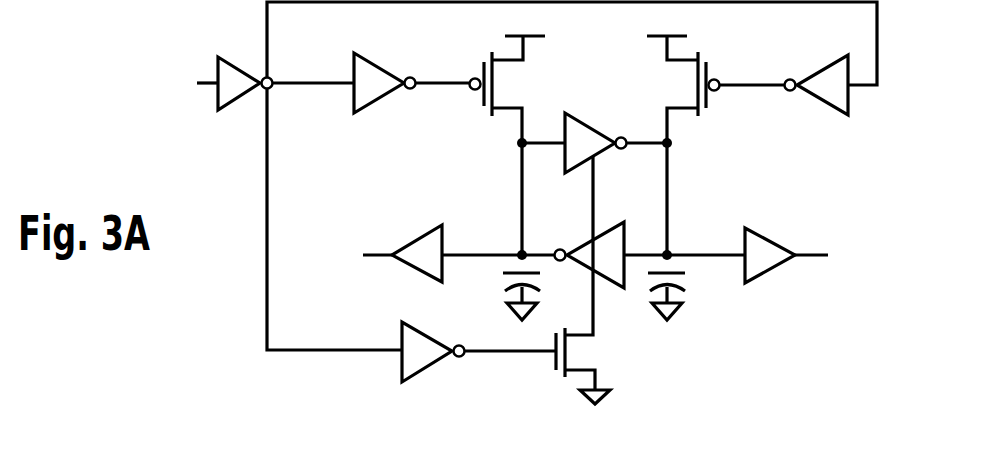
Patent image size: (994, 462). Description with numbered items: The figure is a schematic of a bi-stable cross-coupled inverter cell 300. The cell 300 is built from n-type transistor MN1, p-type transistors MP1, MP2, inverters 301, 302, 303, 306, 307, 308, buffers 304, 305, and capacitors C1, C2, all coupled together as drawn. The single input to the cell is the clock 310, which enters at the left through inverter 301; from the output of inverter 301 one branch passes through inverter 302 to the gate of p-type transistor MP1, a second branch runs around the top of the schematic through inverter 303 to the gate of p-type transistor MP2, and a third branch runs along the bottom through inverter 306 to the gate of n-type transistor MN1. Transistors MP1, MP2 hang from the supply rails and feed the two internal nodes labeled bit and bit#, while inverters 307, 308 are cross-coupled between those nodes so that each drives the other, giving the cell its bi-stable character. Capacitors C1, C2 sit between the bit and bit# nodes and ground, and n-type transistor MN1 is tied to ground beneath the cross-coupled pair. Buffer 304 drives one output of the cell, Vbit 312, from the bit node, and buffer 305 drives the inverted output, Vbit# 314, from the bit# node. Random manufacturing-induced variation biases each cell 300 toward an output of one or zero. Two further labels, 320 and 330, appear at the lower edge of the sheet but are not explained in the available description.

The bi-stable cross-coupled inverter cell 300 is at (78, 72).
The clock 310 is at (143, 105).
The inverter 301 is at (243, 105).
The inverter 302 is at (396, 107).
The inverter 303 is at (822, 113).
The buffer 304 is at (403, 265).
The buffer 305 is at (782, 283).
The inverter 306 is at (432, 380).
The inverter 307 is at (630, 228).
The inverter 308 is at (592, 115).
The Vbit 312 is at (383, 218).
The Vbit# 314 is at (890, 212).
The node 320 is at (669, 457).
The node 330 is at (246, 457).
The p-type transistor MP1 is at (468, 70).
The p-type transistor MP2 is at (725, 72).
The n-type transistor MN1 is at (560, 388).
The capacitor C1 is at (503, 285).
The capacitor C2 is at (684, 285).